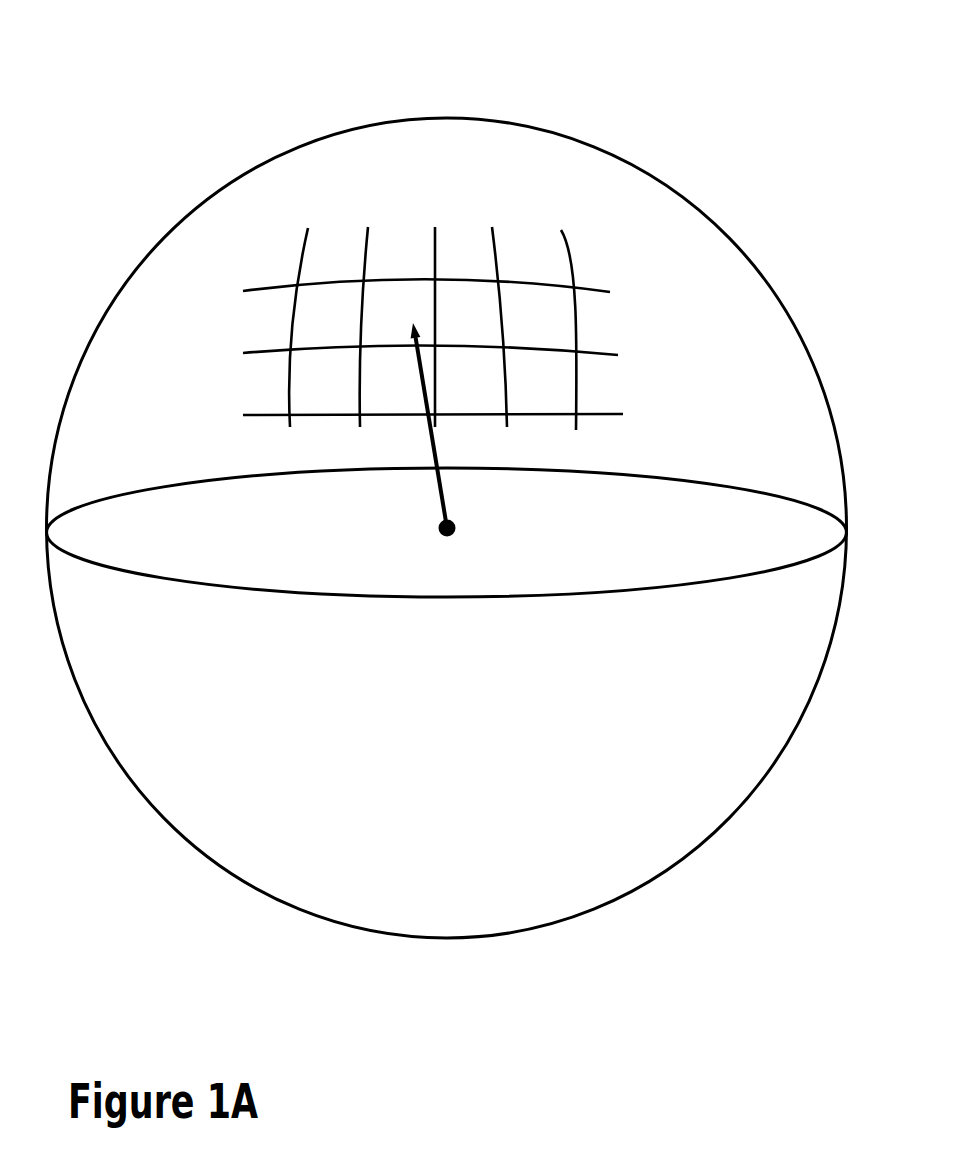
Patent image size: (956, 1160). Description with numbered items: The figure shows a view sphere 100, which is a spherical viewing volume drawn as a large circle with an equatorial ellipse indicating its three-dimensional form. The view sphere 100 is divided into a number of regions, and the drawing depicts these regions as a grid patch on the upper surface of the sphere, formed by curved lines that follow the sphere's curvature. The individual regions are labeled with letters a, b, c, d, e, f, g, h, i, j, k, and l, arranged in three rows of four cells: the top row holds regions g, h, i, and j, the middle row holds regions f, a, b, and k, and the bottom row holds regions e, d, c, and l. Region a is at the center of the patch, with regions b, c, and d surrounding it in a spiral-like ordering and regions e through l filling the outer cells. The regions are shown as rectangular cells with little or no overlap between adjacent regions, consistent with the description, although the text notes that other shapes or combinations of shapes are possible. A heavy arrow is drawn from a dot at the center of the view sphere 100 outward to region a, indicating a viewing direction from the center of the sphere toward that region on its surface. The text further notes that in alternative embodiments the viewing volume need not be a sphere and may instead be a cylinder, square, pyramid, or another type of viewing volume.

The view sphere 100 is at (447, 470).
The grid cell a is at (399, 316).
The grid cell b is at (469, 316).
The grid cell c is at (471, 382).
The grid cell d is at (398, 382).
The grid cell e is at (327, 382).
The grid cell f is at (329, 316).
The grid cell g is at (332, 254).
The grid cell h is at (400, 254).
The grid cell i is at (465, 254).
The grid cell j is at (531, 254).
The grid cell k is at (538, 312).
The grid cell l is at (542, 382).